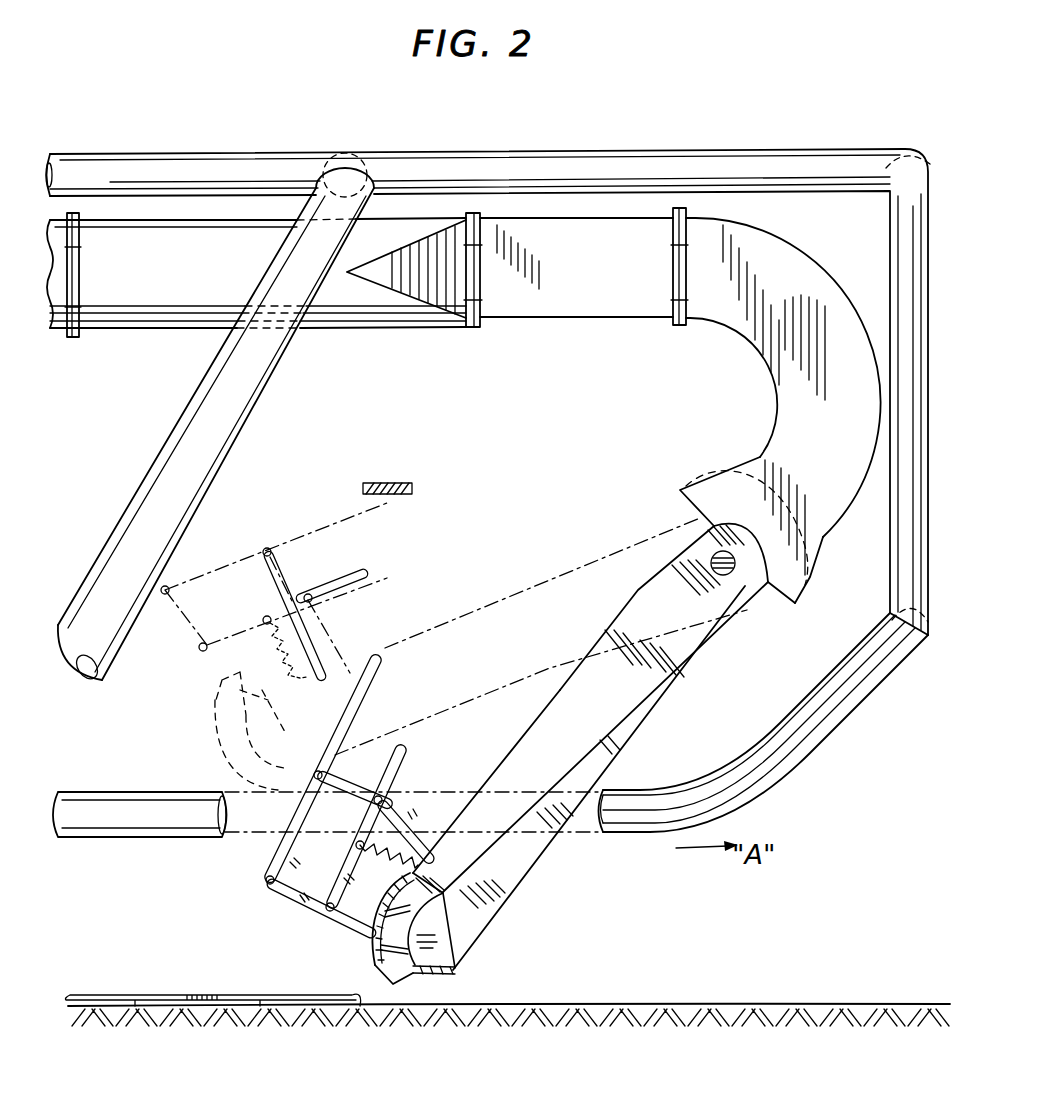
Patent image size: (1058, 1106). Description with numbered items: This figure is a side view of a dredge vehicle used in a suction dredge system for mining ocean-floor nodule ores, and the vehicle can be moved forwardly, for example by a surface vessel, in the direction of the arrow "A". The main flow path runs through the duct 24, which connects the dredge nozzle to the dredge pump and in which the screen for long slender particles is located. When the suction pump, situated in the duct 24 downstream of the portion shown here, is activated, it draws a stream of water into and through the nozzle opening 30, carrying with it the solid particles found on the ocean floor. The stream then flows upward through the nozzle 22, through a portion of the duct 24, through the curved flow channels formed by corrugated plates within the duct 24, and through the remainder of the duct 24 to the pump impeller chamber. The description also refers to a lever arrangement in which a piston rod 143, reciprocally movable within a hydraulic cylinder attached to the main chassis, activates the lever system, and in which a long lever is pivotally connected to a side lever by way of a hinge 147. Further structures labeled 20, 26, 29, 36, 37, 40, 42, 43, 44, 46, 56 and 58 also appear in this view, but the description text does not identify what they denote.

The frame 20 is at (561, 146).
The nozzle 22 is at (588, 651).
The duct 24 is at (727, 320).
The swivel pivot 26 is at (774, 616).
The lower telescoping chute section 29 is at (650, 715).
The nozzle opening 30 is at (402, 975).
The spout inner wall 36 is at (396, 900).
The spout end face 37 is at (447, 928).
The support linkage 40 is at (313, 920).
The first link 42 is at (292, 893).
The connecting link 43 is at (410, 793).
The lower link 44 is at (273, 860).
The second link 46 is at (353, 877).
The spring 56 is at (398, 861).
The mounting bracket 58 is at (405, 497).
The piston rod 143 is at (548, 722).
The hinge 147 is at (690, 657).